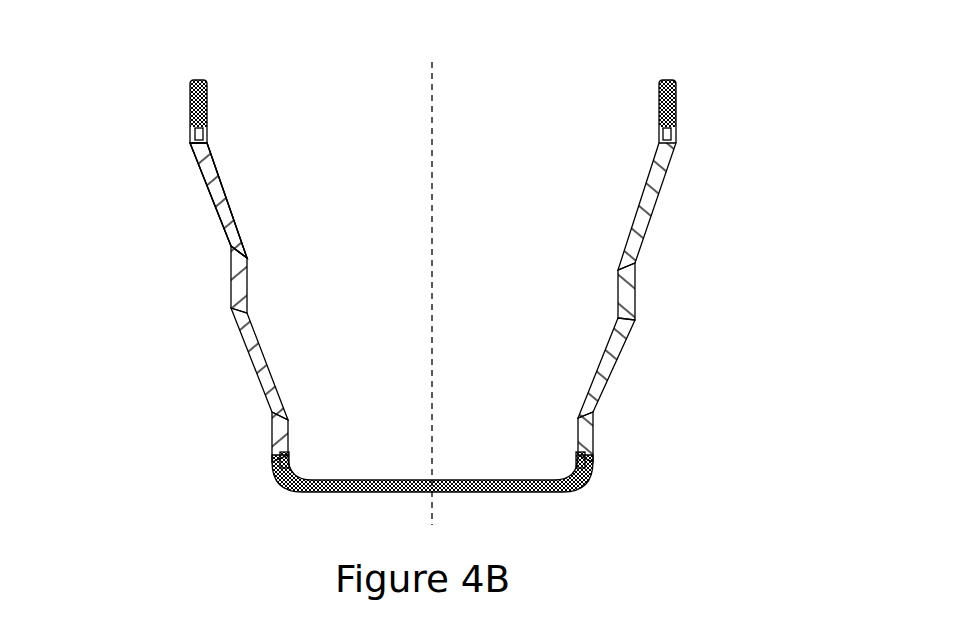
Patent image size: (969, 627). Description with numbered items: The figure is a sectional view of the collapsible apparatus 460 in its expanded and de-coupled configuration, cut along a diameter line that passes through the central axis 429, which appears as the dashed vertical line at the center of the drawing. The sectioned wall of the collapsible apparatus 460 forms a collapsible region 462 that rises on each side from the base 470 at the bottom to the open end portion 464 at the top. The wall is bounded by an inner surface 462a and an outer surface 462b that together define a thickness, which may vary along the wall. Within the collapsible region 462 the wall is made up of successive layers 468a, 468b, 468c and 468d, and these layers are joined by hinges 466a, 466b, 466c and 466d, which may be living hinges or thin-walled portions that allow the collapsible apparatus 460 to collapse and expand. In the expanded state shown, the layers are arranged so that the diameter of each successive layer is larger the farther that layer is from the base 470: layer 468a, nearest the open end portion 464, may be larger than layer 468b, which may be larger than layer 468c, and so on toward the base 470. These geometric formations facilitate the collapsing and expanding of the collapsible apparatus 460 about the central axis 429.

The collapsible apparatus 460 is at (134, 78).
The central axis 429 is at (432, 106).
The collapsible region 462 is at (461, 308).
The first leg portion 462a is at (205, 195).
The outer surface 462b is at (215, 193).
The open end portion 464 is at (675, 113).
The hinge 466a is at (658, 165).
The hinge 466b is at (632, 247).
The hinge 466c is at (618, 330).
The hinge 466d is at (643, 436).
The layer 468a is at (208, 214).
The layer 468b is at (228, 282).
The layer 468c is at (255, 376).
The layer 468d is at (274, 442).
The base 470 is at (588, 481).